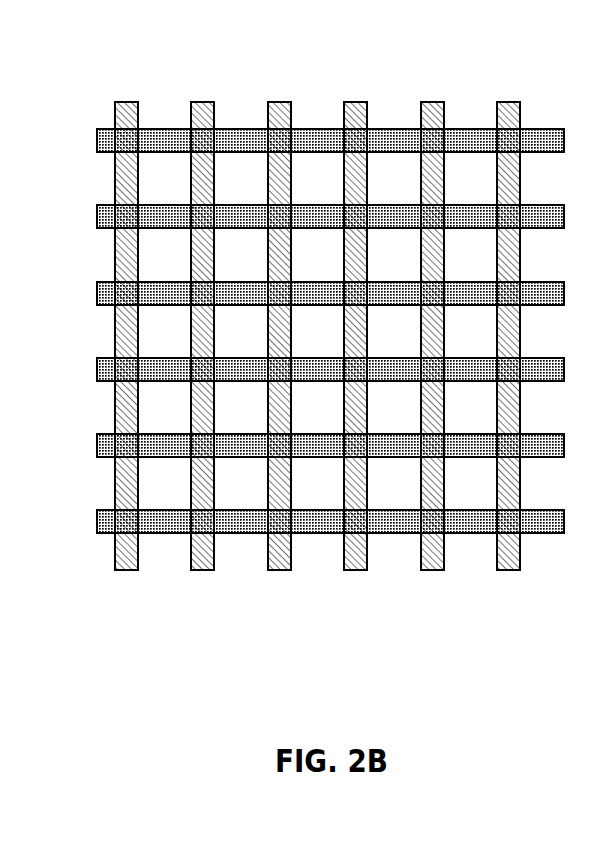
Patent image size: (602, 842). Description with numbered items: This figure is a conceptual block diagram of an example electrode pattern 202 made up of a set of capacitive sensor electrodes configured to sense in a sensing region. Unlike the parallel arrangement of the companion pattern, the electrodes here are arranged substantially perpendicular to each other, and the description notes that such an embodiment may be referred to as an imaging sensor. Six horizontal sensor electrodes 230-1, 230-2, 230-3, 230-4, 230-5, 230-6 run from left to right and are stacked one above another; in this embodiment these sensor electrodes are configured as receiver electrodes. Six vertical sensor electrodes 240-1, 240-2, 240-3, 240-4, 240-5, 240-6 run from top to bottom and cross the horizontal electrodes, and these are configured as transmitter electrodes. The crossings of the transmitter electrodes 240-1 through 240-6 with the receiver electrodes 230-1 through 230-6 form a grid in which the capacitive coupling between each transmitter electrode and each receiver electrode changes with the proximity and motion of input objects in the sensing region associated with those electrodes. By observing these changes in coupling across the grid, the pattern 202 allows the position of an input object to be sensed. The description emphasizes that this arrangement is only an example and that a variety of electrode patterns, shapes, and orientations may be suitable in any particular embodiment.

The memory cell array (cross-point array) 202 is at (188, 40).
The sensor electrode 230-1 is at (97, 143).
The sensor electrode 230-2 is at (97, 219).
The sensor electrode 230-3 is at (97, 296).
The sensor electrode 230-4 is at (97, 372).
The sensor electrode 230-5 is at (97, 448).
The sensor electrode 230-6 is at (97, 524).
The sensor electrode 240-1 is at (122, 570).
The sensor electrode 240-2 is at (198, 570).
The sensor electrode 240-3 is at (275, 570).
The sensor electrode 240-4 is at (351, 570).
The sensor electrode 240-5 is at (428, 570).
The sensor electrode 240-6 is at (504, 570).